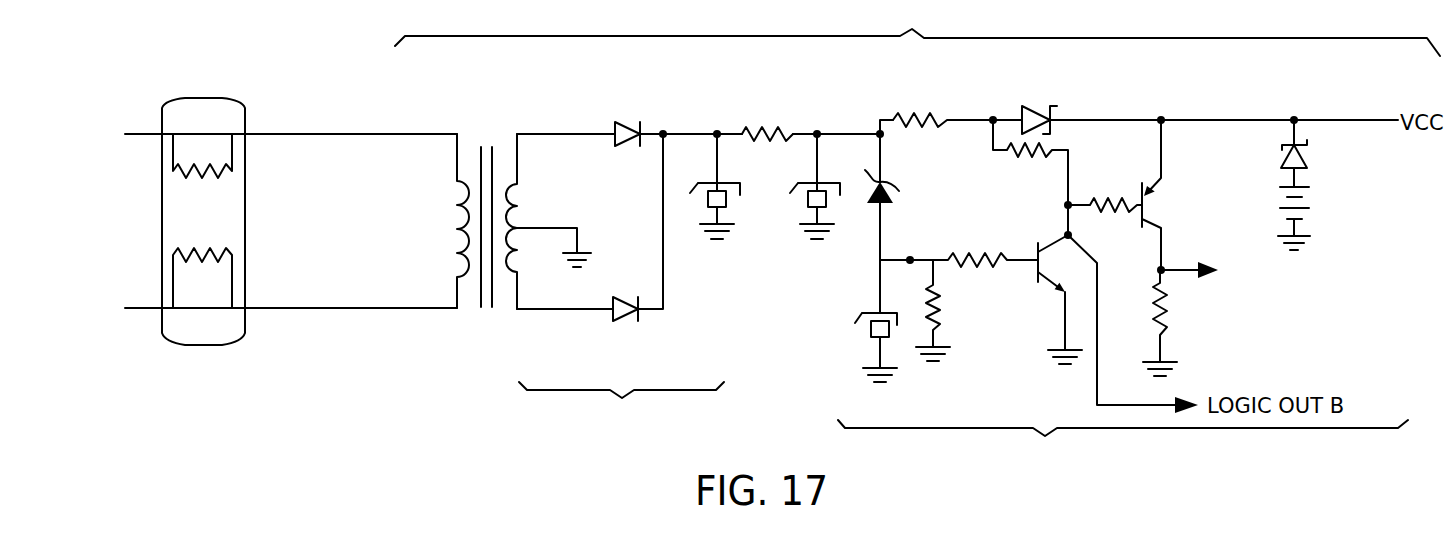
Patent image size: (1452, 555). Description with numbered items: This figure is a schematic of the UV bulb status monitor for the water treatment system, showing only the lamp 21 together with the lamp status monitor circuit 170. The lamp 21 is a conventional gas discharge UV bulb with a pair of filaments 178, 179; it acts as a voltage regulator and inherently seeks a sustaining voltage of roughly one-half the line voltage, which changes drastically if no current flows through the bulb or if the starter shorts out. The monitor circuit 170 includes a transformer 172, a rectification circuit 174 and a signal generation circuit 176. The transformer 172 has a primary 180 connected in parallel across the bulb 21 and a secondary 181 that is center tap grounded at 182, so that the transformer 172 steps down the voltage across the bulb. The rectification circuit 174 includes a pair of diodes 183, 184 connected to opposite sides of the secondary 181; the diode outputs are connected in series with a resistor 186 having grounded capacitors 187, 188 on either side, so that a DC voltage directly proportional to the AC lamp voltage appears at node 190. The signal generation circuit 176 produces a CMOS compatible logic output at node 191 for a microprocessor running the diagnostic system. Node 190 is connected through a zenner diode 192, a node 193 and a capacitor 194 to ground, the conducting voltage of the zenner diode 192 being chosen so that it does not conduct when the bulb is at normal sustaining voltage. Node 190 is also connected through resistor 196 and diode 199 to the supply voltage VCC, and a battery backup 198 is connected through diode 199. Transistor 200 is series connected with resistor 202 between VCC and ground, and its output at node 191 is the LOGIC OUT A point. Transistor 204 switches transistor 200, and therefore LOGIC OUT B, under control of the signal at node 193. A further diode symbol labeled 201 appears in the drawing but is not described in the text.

The lamp 21 is at (215, 98).
The lamp status monitor circuit 170 is at (917, 29).
The transformer 172 is at (518, 259).
The rectification circuit 174 is at (621, 406).
The signal generation circuit 176 is at (1123, 442).
The filament 178 is at (202, 263).
The filament 179 is at (200, 178).
The primary 180 is at (457, 204).
The secondary 181 is at (512, 207).
The center tab ground 182 is at (578, 243).
The diode 183 is at (617, 125).
The diode 184 is at (620, 322).
The resistor 186 is at (770, 127).
The capacitor 187 is at (742, 192).
The capacitor 188 is at (834, 192).
The node 190 is at (879, 130).
The node 191 is at (1163, 268).
The zenner diode 192 is at (868, 204).
The node 193 is at (911, 257).
The capacitor 194 is at (898, 328).
The resistor 196 is at (927, 116).
The battery backup 198 is at (1310, 195).
The diode 199 is at (1300, 155).
The transistor 200 is at (1162, 198).
The zener diode 201 is at (1034, 102).
The resistor 202 is at (1168, 302).
The transistor 204 is at (1048, 238).